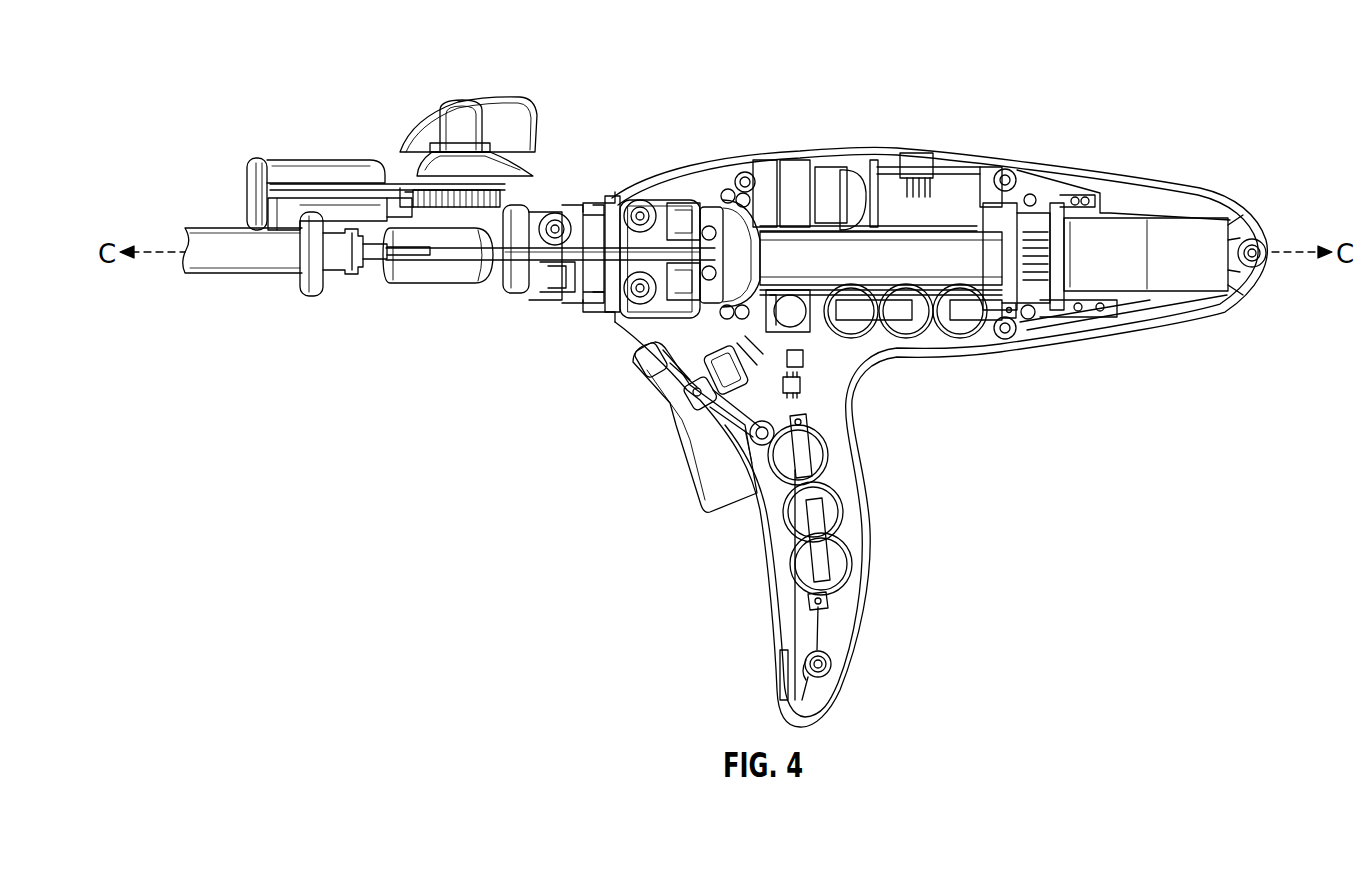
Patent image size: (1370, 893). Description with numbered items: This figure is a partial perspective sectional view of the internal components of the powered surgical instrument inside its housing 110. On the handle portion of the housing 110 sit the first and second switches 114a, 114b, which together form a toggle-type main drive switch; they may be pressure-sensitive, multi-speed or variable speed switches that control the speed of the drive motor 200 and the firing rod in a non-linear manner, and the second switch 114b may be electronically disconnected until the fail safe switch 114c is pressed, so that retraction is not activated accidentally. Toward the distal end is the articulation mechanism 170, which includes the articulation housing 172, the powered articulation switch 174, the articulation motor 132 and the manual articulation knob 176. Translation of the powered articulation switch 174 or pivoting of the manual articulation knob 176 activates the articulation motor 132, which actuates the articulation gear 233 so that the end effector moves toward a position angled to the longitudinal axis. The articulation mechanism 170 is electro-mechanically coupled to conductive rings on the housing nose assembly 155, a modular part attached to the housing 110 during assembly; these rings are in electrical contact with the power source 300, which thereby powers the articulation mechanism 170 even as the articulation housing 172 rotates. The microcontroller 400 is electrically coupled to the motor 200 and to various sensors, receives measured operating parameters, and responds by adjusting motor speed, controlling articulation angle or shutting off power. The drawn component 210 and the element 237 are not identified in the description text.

The housing 110 is at (1149, 171).
The first switch 114a is at (694, 487).
The second switch 114b is at (645, 380).
The fail safe switch 114c is at (849, 330).
The articulation motor 132 is at (292, 158).
The housing nose assembly 155 is at (593, 196).
The articulation mechanism 170 is at (387, 90).
The articulation housing 172 is at (418, 170).
The powered articulation switch 174 is at (796, 160).
The manual articulation knob 176 is at (488, 100).
The drive motor 200 is at (1198, 233).
The motor 210 is at (874, 243).
The articulation gear 233 is at (492, 238).
The coupler 237 is at (598, 300).
The power source 300 is at (969, 334).
The microcontroller 400 is at (801, 385).